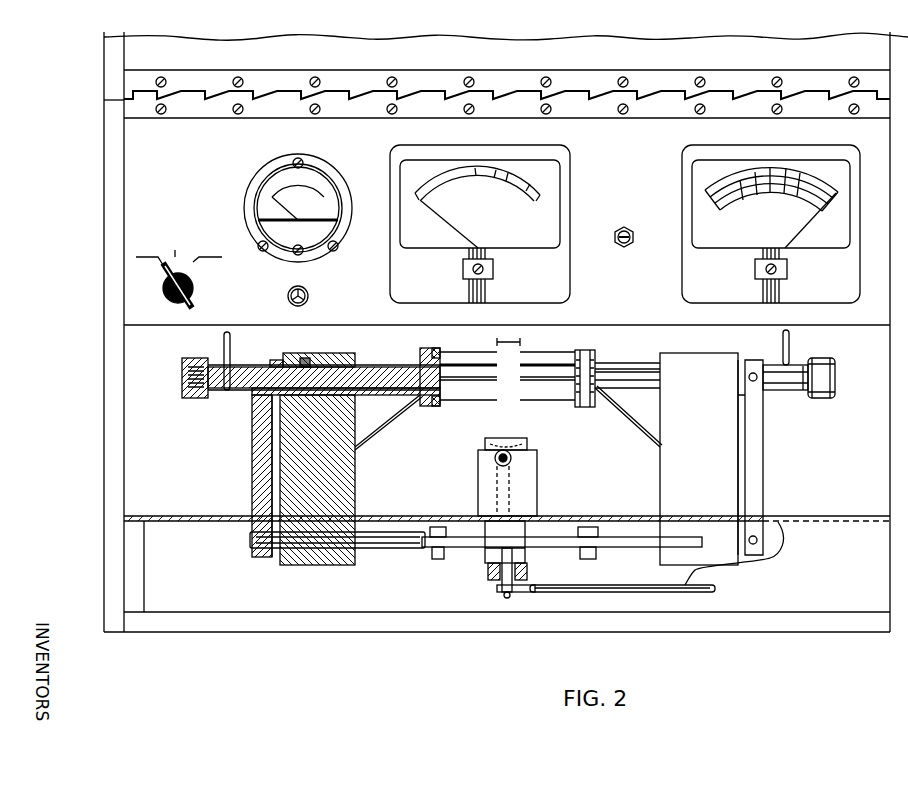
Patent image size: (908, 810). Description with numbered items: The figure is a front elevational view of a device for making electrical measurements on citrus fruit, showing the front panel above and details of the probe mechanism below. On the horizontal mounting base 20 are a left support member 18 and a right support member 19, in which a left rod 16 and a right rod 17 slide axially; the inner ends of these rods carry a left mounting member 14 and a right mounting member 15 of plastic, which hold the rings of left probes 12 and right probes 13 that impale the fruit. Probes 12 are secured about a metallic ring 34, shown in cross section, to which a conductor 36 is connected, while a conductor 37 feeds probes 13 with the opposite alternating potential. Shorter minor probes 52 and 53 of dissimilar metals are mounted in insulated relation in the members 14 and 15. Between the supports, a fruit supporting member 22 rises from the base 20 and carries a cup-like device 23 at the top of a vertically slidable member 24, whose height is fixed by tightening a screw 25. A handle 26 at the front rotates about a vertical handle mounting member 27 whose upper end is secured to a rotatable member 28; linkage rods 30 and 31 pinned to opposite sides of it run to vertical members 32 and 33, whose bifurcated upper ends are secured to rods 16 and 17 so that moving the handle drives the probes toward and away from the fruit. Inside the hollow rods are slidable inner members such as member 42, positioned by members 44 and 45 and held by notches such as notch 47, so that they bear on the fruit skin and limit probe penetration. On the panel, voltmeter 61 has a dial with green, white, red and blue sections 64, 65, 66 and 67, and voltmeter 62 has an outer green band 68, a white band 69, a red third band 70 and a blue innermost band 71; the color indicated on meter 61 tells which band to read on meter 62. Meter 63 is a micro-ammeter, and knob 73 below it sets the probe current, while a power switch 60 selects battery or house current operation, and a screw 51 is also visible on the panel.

The probes 12 is at (480, 378).
The probes 13 is at (530, 378).
The left mounting member 14 is at (455, 318).
The right mounting member 15 is at (605, 363).
The rod 16 is at (372, 336).
The rod 17 is at (628, 363).
The left support member 18 is at (335, 478).
The right support member 19 is at (672, 462).
The mounting base 20 is at (825, 516).
The fruit supporting member 22 is at (537, 470).
The cup-like device 23 is at (518, 423).
The vertically slidable member 24 is at (497, 492).
The screw 25 is at (495, 458).
The handle 26 is at (705, 592).
The handle mounting member 27 is at (505, 575).
The rotatable member 28 is at (545, 537).
The linkage rod 30 is at (400, 548).
The linkage rod 31 is at (605, 537).
The vertical member 32 is at (252, 488).
The vertical member 33 is at (748, 472).
The metallic ring 34 is at (438, 408).
The conductor 36 is at (393, 418).
The conductor 37 is at (630, 398).
The slidable inner member 42 is at (395, 365).
The member 44 is at (221, 340).
The member 45 is at (789, 348).
The notch 47 is at (778, 375).
The screw 51 is at (616, 246).
The minor probe 52 is at (470, 340).
The minor probe 53 is at (583, 350).
The power switch 60 is at (163, 288).
The voltmeter 61 is at (501, 213).
The voltmeter 62 is at (760, 212).
The meter 63 is at (310, 168).
The green section 64 is at (420, 197).
The white section 65 is at (478, 176).
The red section 66 is at (500, 178).
The blue section 67 is at (533, 188).
The outer band 68 is at (712, 196).
The band 69 is at (716, 203).
The third band 70 is at (720, 209).
The innermost band 71 is at (725, 215).
The knob 73 is at (308, 298).